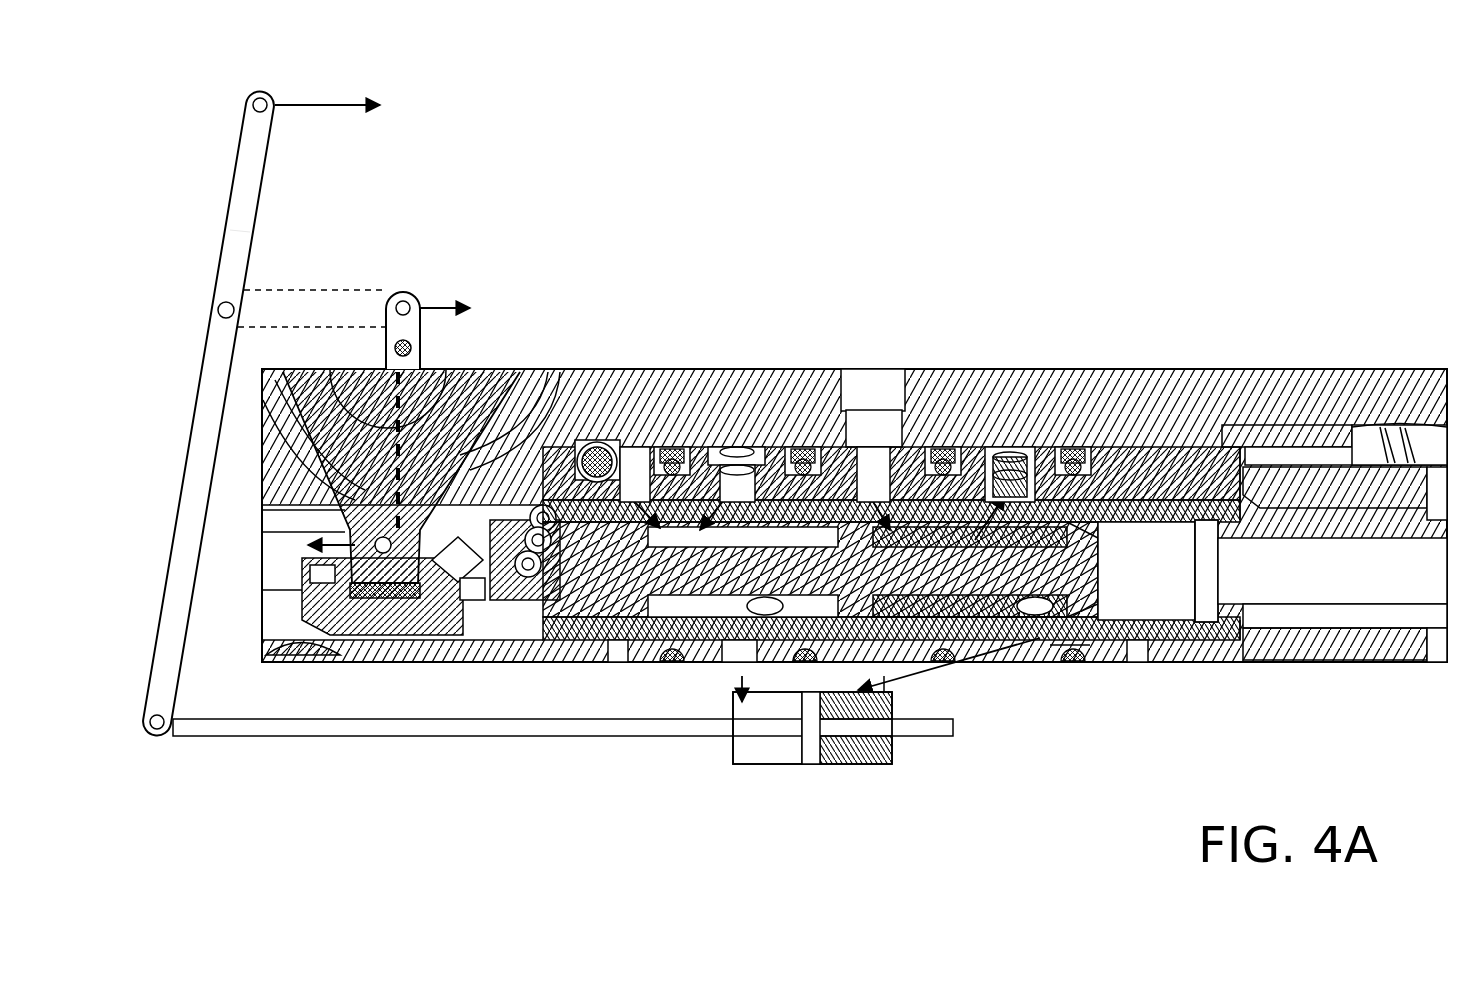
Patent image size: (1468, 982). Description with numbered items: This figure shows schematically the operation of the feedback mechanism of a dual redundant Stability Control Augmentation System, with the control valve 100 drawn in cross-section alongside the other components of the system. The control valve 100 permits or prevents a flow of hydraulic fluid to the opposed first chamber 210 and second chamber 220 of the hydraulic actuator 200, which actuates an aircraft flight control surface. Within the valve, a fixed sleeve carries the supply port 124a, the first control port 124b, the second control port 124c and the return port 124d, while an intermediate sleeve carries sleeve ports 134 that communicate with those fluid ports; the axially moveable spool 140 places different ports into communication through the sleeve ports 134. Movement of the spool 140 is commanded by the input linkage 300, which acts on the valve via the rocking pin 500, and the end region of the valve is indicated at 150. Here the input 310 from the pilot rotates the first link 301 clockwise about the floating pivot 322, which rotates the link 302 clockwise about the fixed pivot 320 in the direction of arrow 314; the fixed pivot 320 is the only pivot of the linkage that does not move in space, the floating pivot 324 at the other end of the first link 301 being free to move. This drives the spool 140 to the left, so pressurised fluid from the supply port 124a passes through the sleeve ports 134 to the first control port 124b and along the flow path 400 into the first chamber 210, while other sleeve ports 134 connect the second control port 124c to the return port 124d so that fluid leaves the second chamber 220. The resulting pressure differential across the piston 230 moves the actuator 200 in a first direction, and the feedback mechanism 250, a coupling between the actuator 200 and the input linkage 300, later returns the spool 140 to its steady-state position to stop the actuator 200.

The control valve 100 is at (1180, 370).
The supply port 124a is at (873, 480).
The first control port 124b is at (1010, 450).
The second control port 124c is at (745, 480).
The return port 124d is at (630, 455).
The sleeve ports 134 is at (875, 372).
The spool 140 is at (1070, 650).
The end cap 150 is at (1410, 440).
The hydraulic actuator 200 is at (792, 754).
The first chamber 210 is at (862, 760).
The second chamber 220 is at (765, 755).
The piston 230 is at (812, 755).
The feedback mechanism 250 is at (400, 737).
The input linkage 300 is at (200, 425).
The first link 301 is at (230, 232).
The link 302 is at (405, 292).
The input 310 is at (342, 88).
The arrow 314 is at (457, 292).
The fixed pivot 320 is at (410, 348).
The floating pivot 322 is at (150, 712).
The floating pivot 324 is at (248, 100).
The flow path 400 is at (968, 665).
The rocking pin 500 is at (590, 372).